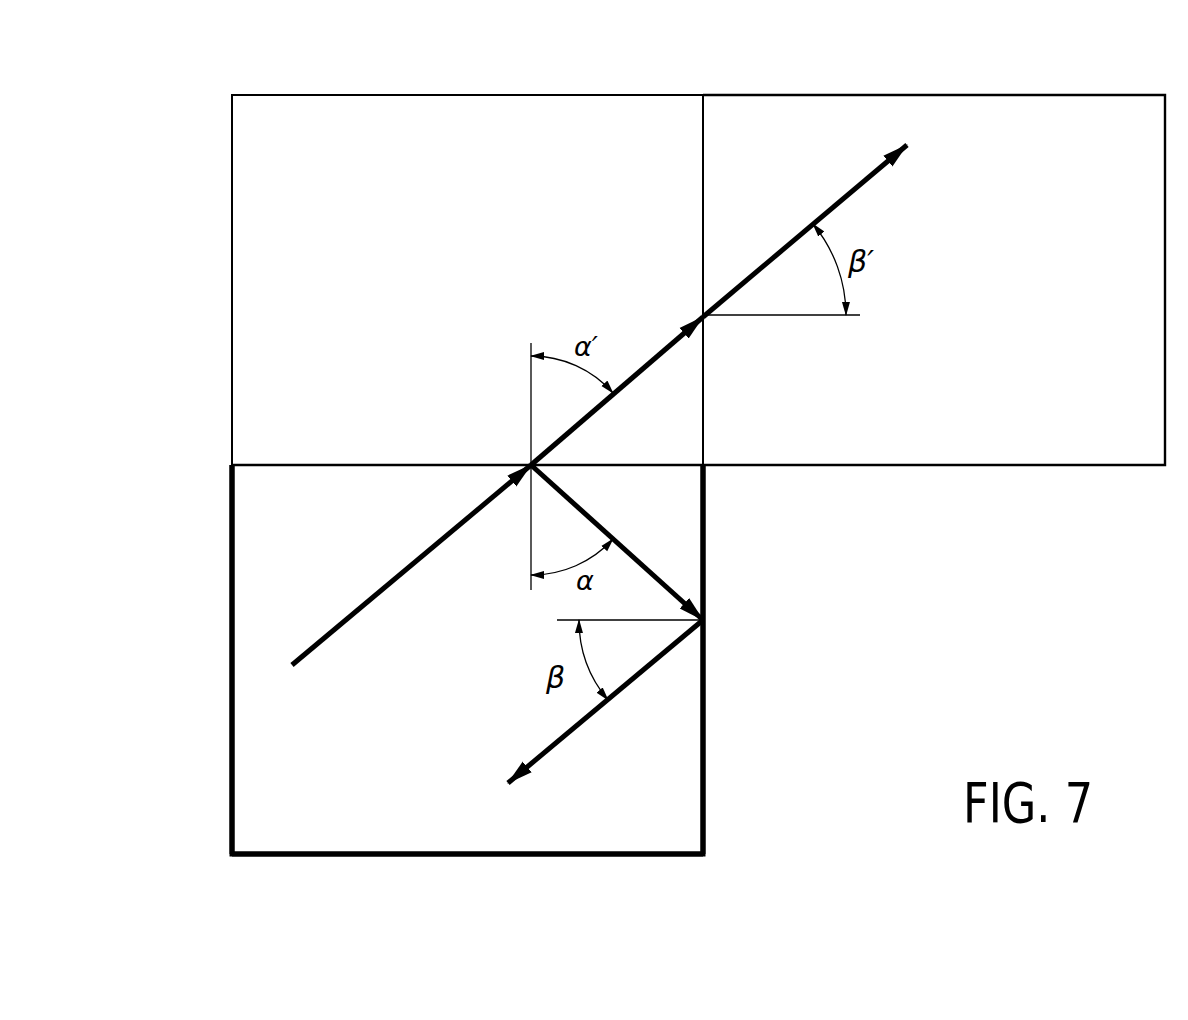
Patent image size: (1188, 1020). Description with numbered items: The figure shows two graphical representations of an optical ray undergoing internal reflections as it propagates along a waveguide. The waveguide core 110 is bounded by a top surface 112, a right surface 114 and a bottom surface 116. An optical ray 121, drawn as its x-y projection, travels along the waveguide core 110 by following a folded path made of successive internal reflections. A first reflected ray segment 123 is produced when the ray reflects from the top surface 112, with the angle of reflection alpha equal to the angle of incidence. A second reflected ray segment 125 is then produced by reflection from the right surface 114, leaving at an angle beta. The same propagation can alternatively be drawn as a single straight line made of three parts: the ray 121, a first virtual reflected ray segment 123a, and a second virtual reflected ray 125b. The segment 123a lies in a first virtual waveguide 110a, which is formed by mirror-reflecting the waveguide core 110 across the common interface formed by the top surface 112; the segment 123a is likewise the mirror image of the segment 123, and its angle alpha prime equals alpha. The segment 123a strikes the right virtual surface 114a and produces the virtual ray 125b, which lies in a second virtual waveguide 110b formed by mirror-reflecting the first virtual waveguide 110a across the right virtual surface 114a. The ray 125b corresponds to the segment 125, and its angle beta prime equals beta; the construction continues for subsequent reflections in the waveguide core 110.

The waveguide core 110 is at (380, 855).
The first virtual waveguide 110a is at (577, 95).
The second virtual waveguide 110b is at (856, 95).
The top surface 112 is at (258, 468).
The right surface 114 is at (700, 777).
The right virtual surface 114a is at (703, 108).
The bottom surface 116 is at (648, 853).
The optical ray 121 is at (372, 597).
The first reflected ray segment 123 is at (578, 507).
The first virtual reflected ray segment 123a is at (590, 414).
The second reflected ray segment 125 is at (546, 754).
The second virtual reflected ray 125b is at (843, 195).